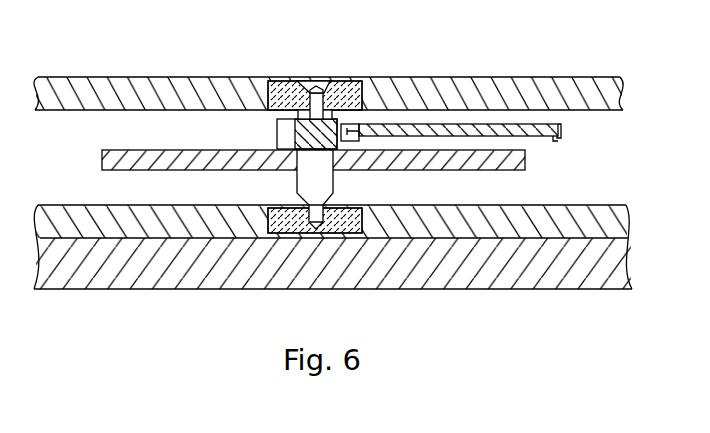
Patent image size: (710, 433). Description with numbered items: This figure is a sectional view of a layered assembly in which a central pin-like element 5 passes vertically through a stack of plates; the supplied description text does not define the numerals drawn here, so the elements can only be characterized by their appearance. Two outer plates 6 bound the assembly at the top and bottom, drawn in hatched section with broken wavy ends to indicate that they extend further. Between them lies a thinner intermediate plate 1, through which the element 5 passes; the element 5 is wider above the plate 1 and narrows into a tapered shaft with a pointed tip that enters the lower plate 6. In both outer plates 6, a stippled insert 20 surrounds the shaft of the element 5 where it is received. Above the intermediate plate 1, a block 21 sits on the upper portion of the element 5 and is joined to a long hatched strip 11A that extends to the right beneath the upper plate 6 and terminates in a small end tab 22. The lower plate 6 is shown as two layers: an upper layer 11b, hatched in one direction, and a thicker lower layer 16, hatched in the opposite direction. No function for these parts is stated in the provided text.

The workpiece plate 1 is at (113, 158).
The locating pin 5 is at (324, 178).
The rigid plate 6 is at (621, 87).
The clamping strip 11A is at (409, 130).
The upper layer of lower plate 11b is at (498, 215).
The lower layer of lower plate 16 is at (497, 262).
The elastic insert 20 is at (279, 92).
The clamp block 21 is at (277, 133).
The strip end tab 22 is at (549, 135).